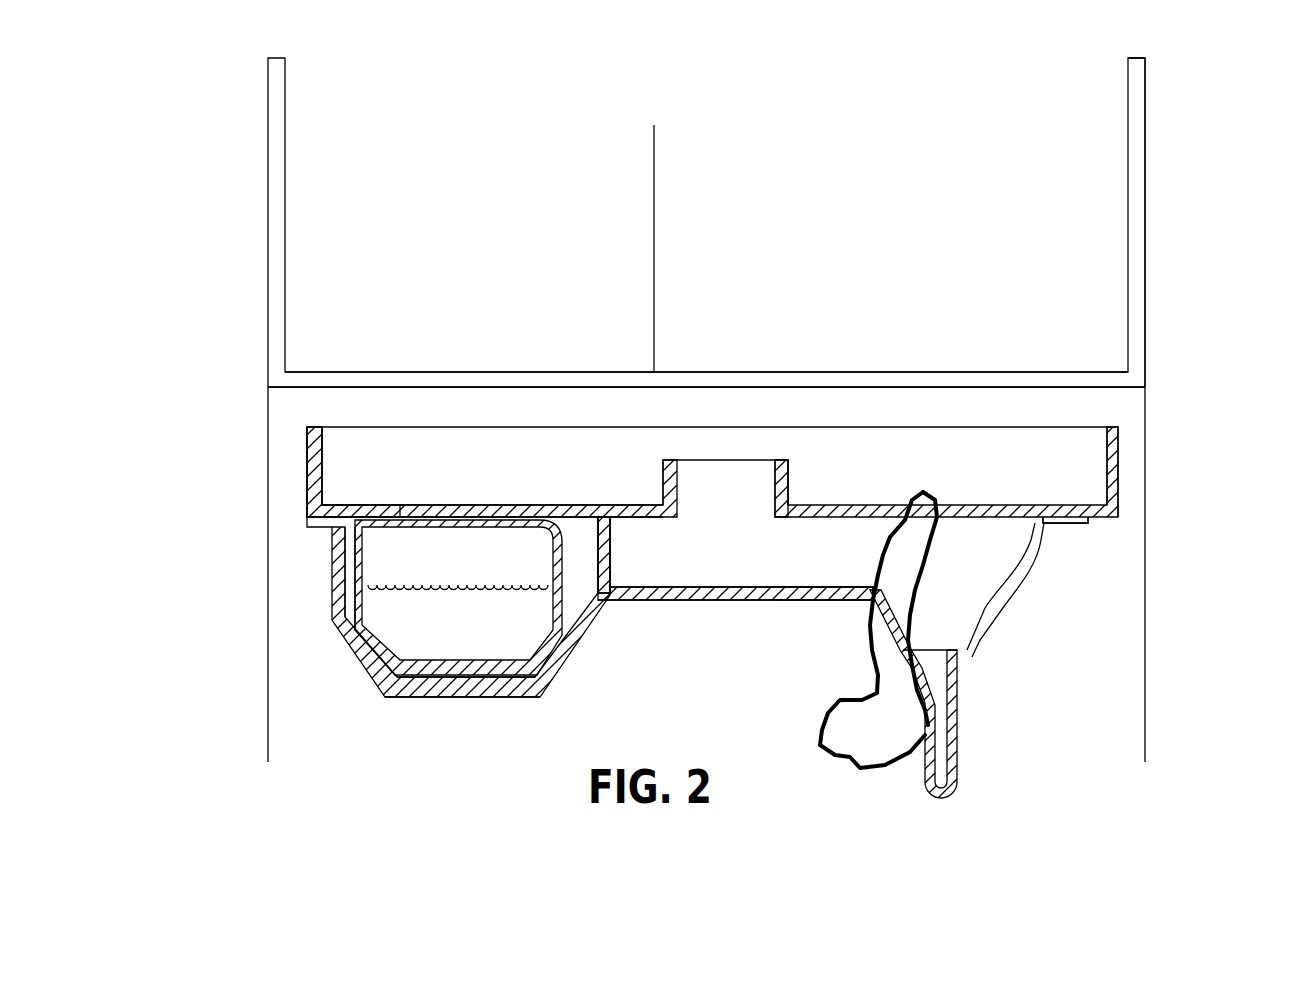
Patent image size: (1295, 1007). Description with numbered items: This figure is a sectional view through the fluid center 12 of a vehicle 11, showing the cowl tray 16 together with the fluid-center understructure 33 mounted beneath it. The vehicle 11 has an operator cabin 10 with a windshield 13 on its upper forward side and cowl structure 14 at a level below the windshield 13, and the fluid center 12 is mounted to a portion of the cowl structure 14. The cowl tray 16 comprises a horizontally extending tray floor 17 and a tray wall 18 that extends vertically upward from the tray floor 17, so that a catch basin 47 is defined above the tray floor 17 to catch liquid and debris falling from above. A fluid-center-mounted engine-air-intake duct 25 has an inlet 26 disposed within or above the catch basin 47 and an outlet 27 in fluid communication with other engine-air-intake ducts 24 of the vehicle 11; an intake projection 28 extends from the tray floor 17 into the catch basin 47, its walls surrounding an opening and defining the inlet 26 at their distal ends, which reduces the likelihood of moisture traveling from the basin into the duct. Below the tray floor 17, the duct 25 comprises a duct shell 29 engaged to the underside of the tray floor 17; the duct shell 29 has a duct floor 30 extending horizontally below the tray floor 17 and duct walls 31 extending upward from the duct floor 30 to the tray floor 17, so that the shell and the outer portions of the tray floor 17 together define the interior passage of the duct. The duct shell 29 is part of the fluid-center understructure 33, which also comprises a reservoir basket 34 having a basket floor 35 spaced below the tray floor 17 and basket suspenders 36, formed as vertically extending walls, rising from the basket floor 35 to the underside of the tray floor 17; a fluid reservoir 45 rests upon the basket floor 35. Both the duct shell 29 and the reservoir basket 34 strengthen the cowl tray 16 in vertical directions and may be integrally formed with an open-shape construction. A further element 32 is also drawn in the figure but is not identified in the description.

The operator cabin 10 is at (1143, 130).
The vehicle 11 is at (1163, 346).
The fluid center 12 is at (1117, 465).
The windshield 13 is at (1048, 200).
The cowl structure 14 is at (1098, 523).
The cowl tray 16 is at (388, 503).
The tray floor 17 is at (537, 505).
The tray wall 18 is at (307, 491).
The engine-air-intake ducts 24 is at (957, 733).
The fluid-center-mounted engine-air-intake duct 25 is at (848, 517).
The inlet 26 is at (727, 460).
The outlet 27 is at (933, 643).
The intake projection 28 is at (789, 480).
The duct shell 29 is at (718, 600).
The duct floor 30 is at (765, 603).
The duct walls 31 is at (612, 598).
The wick 32 is at (918, 508).
The fluid-center understructure 33 is at (668, 600).
The reservoir basket 34 is at (394, 694).
The basket floor 35 is at (462, 693).
The basket suspenders 36 is at (338, 580).
The fluid reservoir 45 is at (347, 618).
The catch basin 47 is at (1008, 483).